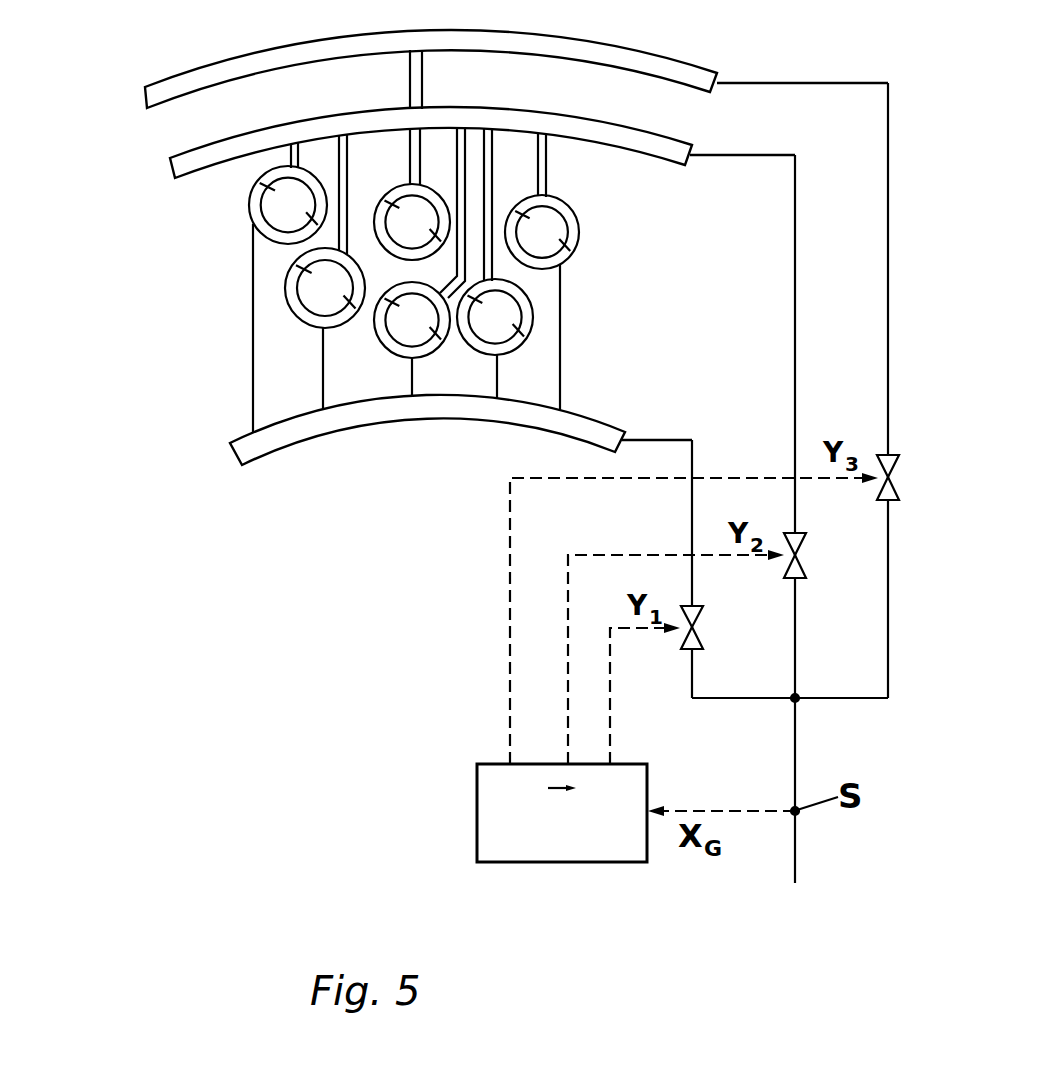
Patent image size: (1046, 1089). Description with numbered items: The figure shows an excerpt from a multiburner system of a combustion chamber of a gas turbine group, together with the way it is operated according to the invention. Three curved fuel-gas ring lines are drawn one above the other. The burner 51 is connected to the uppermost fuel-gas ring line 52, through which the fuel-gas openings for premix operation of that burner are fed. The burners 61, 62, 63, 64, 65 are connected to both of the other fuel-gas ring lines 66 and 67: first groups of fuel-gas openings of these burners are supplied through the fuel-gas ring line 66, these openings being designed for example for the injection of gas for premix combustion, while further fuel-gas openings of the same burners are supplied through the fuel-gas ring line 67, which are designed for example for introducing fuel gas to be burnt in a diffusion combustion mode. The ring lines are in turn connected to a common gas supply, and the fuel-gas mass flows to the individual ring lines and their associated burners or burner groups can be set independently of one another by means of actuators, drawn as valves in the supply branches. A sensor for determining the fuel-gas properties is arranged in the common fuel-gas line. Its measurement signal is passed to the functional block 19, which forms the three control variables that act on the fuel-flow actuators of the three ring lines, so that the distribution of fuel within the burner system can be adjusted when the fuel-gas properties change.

The fuel-gas ring line 52 is at (152, 93).
The fuel-gas ring line 66 is at (180, 165).
The fuel-gas ring line 67 is at (243, 453).
The burner 51 is at (412, 222).
The burner 61 is at (288, 205).
The burner 62 is at (325, 288).
The burner 63 is at (412, 320).
The burner 64 is at (495, 317).
The burner 65 is at (542, 232).
The functional block 19 is at (598, 862).